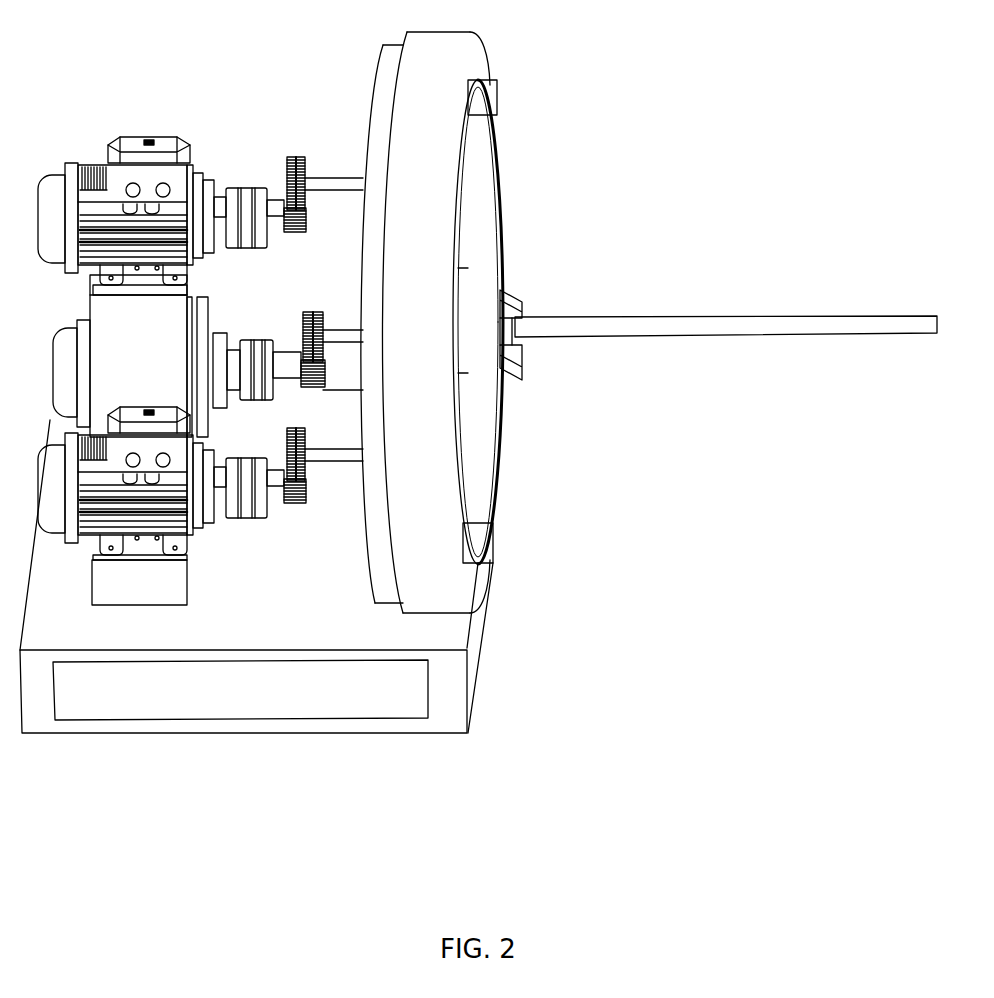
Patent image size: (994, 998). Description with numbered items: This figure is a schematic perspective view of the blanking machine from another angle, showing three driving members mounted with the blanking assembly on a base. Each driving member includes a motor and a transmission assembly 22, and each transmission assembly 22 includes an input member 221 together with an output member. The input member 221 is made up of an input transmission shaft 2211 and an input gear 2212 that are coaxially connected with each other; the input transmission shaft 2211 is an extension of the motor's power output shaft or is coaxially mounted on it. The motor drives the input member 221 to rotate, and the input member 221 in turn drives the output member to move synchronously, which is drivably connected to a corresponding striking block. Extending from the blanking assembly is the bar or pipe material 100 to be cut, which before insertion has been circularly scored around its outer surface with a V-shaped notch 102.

The transmission assembly 22 is at (283, 178).
The input member 221 is at (285, 233).
The input transmission shaft 2211 is at (278, 210).
The input gear 2212 is at (304, 216).
The bar or pipe material 100 is at (870, 325).
The V-shaped notch 102 is at (508, 305).